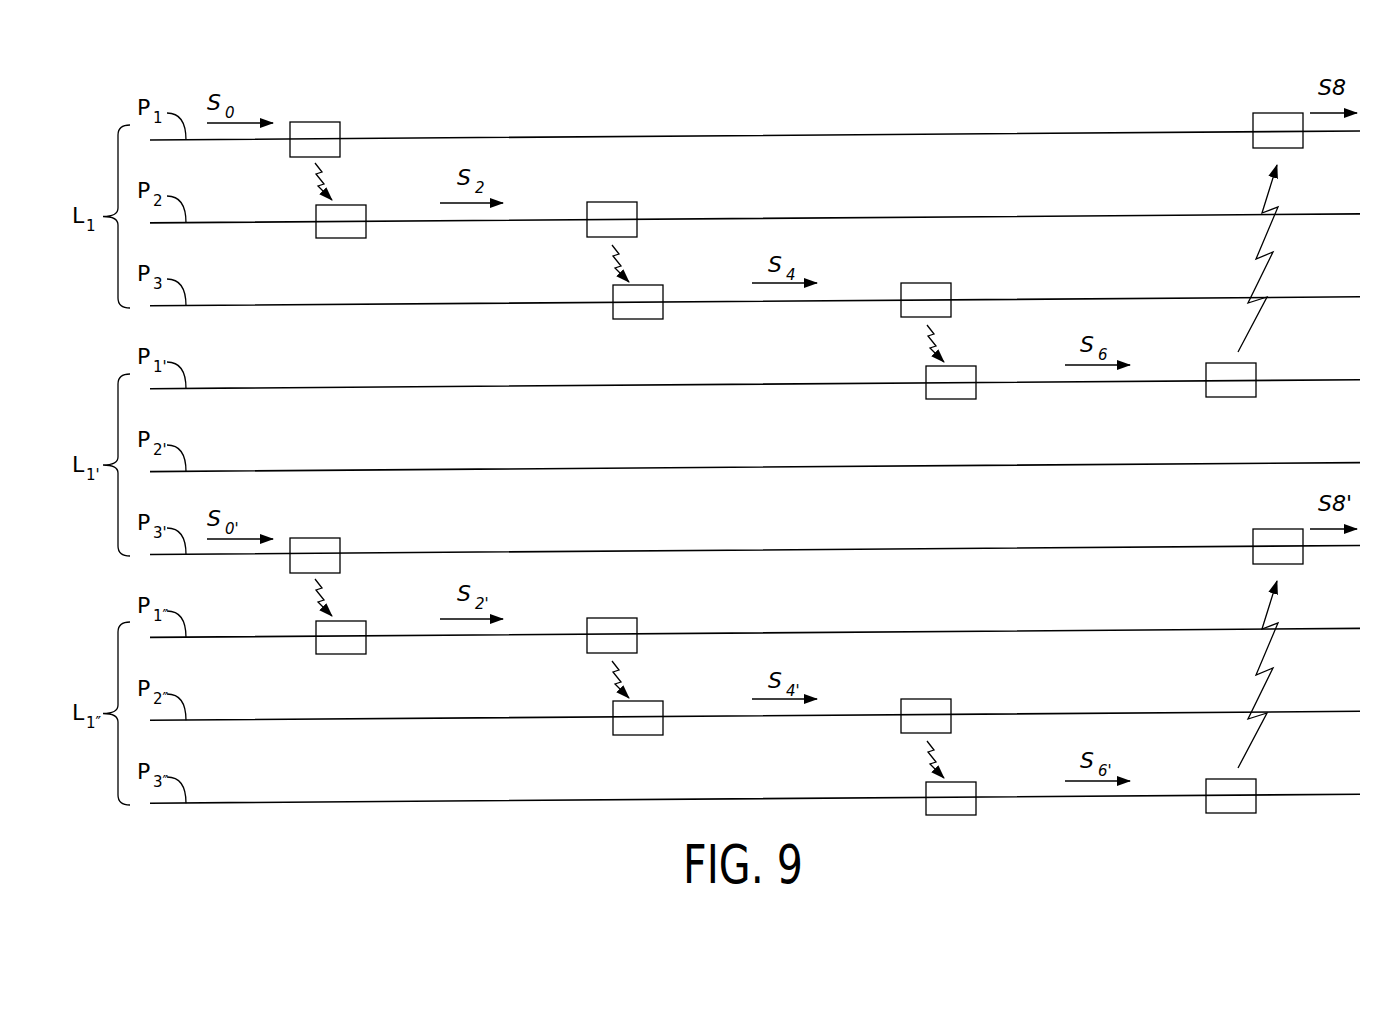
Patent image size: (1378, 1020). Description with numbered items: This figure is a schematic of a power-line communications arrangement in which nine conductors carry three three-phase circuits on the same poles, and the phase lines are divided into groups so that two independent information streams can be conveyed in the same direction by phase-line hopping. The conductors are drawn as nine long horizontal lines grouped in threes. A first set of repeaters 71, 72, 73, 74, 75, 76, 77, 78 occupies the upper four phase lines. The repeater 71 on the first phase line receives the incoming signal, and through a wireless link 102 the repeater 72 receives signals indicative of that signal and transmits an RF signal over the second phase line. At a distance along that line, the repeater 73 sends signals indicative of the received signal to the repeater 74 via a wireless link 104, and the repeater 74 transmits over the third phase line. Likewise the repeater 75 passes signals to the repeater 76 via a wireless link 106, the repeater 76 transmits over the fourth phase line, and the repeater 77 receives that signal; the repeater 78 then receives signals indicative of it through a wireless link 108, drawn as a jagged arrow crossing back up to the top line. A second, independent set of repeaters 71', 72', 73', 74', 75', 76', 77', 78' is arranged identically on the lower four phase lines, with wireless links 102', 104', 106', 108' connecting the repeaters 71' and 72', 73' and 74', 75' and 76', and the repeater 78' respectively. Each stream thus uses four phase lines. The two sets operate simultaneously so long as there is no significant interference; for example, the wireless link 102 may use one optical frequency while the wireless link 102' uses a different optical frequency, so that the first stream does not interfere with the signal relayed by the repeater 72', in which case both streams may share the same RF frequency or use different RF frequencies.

The repeater 71 is at (327, 122).
The repeater 72 is at (354, 239).
The repeater 73 is at (624, 202).
The repeater 74 is at (650, 319).
The repeater 75 is at (938, 282).
The repeater 76 is at (976, 404).
The repeater 77 is at (1248, 400).
The repeater 78 is at (1275, 105).
The wireless link 102 is at (363, 181).
The wireless link 104 is at (660, 260).
The wireless link 106 is at (974, 342).
The wireless link 108 is at (1233, 258).
The repeater 71' is at (330, 538).
The repeater 72' is at (357, 655).
The repeater 73' is at (627, 618).
The repeater 74' is at (653, 735).
The repeater 75' is at (941, 698).
The repeater 76' is at (979, 820).
The repeater 77' is at (1251, 816).
The repeater 78' is at (1271, 522).
The wireless link 102' is at (366, 597).
The wireless link 104' is at (663, 676).
The wireless link 106' is at (977, 758).
The wireless link 108' is at (1233, 674).